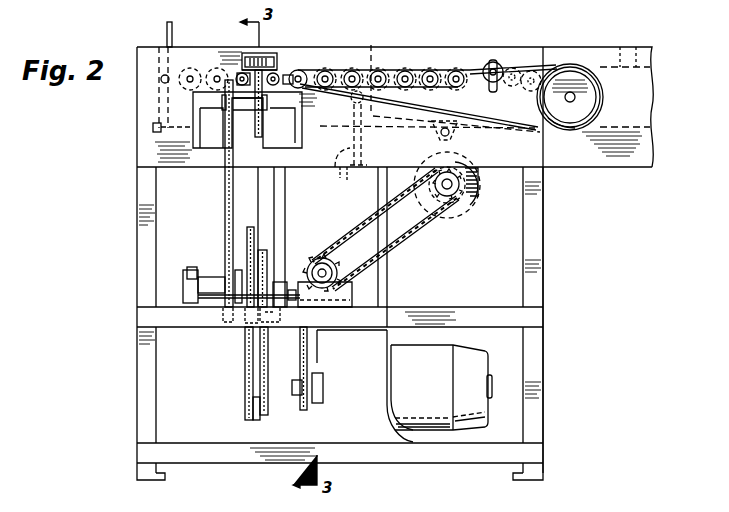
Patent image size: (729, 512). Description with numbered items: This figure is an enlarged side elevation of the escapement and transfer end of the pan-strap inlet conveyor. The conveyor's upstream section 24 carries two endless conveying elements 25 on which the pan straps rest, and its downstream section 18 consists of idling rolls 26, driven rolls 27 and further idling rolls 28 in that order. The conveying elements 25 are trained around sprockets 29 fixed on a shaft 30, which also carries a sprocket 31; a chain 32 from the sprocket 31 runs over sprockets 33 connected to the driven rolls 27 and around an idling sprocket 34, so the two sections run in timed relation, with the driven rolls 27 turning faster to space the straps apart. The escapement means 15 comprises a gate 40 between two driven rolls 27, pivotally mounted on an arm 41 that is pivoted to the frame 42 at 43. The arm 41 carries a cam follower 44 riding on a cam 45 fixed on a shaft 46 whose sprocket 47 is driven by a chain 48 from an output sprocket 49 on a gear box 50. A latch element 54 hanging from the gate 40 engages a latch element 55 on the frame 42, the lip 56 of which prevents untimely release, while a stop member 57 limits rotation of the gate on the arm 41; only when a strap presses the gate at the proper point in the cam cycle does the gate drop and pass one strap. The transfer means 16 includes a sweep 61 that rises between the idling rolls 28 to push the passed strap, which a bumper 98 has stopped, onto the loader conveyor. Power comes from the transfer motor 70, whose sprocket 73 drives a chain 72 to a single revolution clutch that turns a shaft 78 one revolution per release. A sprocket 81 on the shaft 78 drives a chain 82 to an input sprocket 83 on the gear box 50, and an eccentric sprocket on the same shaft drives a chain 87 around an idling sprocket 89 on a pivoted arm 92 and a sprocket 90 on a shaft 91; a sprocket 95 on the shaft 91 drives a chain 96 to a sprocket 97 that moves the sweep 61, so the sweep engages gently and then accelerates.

The escapement means 15 is at (380, 68).
The transfer means 16 is at (269, 52).
The downstream section 18 is at (460, 58).
The upstream section 24 is at (632, 62).
The endless conveying elements 25 is at (606, 65).
The idling rolls 26 is at (504, 62).
The driven rolls 27 is at (331, 68).
The idling rolls 28 is at (188, 66).
The sprockets 29 is at (604, 89).
The shaft 30 is at (571, 91).
The sprocket 31 is at (594, 110).
The chain 32 is at (348, 93).
The sprockets 33 is at (320, 68).
The idling sprocket 34 is at (497, 64).
The gate 40 is at (373, 47).
The arm 41 is at (481, 130).
The frame 42 is at (549, 238).
The pivot connection 43 is at (510, 130).
The cam follower 44 is at (437, 130).
The cam 45 is at (480, 183).
The shaft 46 is at (449, 190).
The sprocket 47 is at (428, 205).
The chain 48 is at (399, 242).
The output sprocket 49 is at (336, 266).
The gear box 50 is at (324, 258).
The latch element 54 is at (352, 129).
The latch element 55 is at (343, 168).
The hook or lip 56 is at (349, 170).
The stop member 57 is at (370, 164).
The sweep 61 is at (245, 54).
The electric motor 70 is at (428, 394).
The chain 72 is at (300, 346).
The sprocket 73 is at (305, 404).
The shaft 78 is at (212, 274).
The sprocket 81 is at (283, 281).
The chain 82 is at (266, 250).
The input sprocket 83 is at (255, 262).
The chain 87 is at (245, 378).
The idling sprocket 89 is at (253, 418).
The sprocket 90 is at (240, 328).
The shaft 91 is at (183, 284).
The pivoted arm 92 is at (260, 390).
The sprocket 95 is at (224, 325).
The chain 96 is at (225, 206).
The sprocket 97 is at (222, 112).
The bumper 98 is at (162, 38).